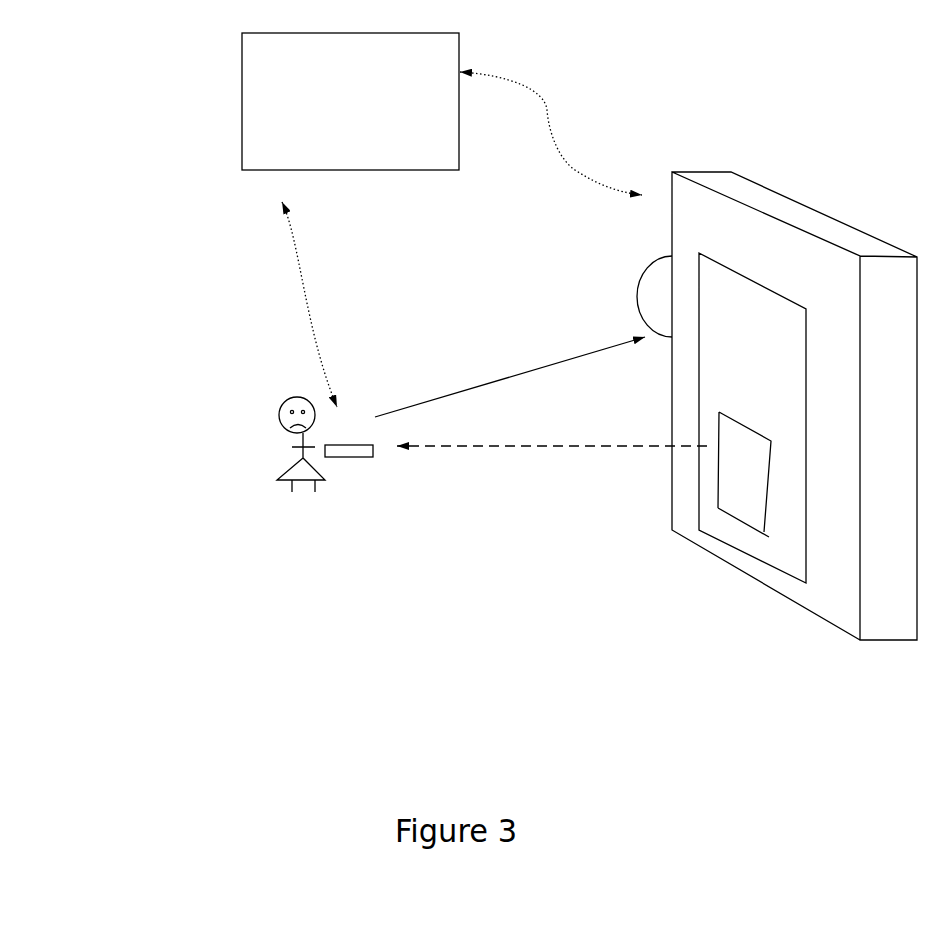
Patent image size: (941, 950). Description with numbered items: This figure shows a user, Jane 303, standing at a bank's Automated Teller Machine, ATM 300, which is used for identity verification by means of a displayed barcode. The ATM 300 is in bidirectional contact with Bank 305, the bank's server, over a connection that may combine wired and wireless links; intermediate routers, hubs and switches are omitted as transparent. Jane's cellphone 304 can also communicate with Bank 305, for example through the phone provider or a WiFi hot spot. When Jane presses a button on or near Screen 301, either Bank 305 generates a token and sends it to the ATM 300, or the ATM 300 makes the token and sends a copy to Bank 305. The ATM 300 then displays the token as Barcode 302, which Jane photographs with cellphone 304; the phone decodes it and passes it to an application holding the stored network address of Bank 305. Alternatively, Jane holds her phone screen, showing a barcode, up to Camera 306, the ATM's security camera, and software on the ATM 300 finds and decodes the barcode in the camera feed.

The ATM 300 is at (782, 617).
The Screen 301 is at (770, 345).
The Barcode 302 is at (738, 475).
The Jane 303 is at (257, 423).
The cellphone 304 is at (348, 459).
The Bank 305 is at (350, 101).
The Camera 306 is at (625, 268).